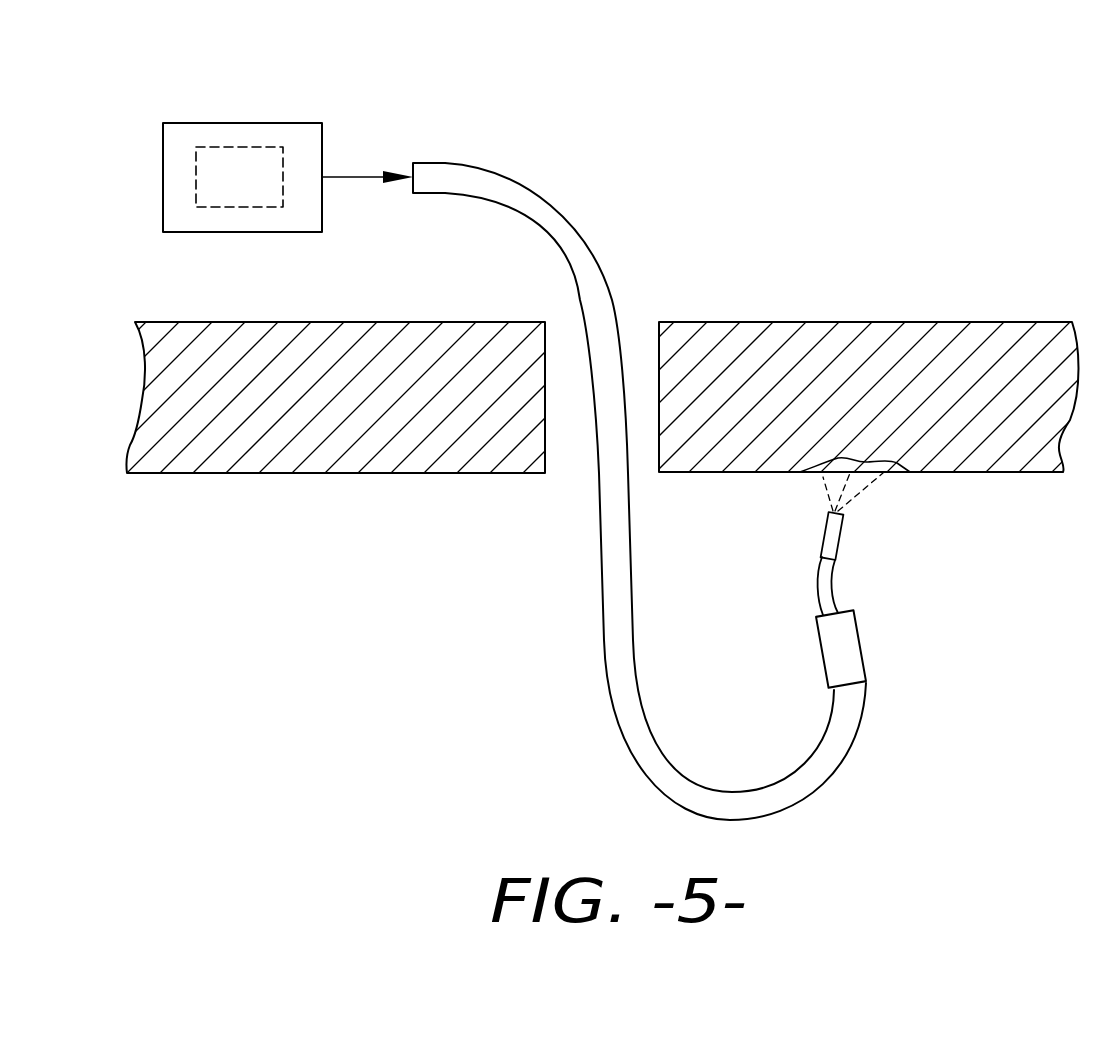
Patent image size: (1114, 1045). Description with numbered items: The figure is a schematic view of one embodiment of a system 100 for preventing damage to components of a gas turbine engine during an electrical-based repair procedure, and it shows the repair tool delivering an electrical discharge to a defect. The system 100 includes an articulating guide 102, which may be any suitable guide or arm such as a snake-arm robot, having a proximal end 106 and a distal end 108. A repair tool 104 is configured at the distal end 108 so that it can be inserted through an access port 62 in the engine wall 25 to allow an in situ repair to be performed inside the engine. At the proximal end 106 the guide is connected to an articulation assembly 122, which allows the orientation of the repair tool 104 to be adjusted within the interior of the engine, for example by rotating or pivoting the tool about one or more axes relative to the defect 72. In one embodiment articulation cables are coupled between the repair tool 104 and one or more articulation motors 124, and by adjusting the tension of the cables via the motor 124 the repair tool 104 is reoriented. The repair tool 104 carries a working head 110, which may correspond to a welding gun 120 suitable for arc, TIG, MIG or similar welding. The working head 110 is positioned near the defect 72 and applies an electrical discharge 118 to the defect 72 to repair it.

The system 100 is at (550, 427).
The articulation assembly 122 is at (227, 174).
The articulation motor 124 is at (228, 207).
The proximal end 106 is at (445, 162).
The articulating guide 102 is at (589, 243).
The access port 62 is at (633, 327).
The wall 25 is at (930, 322).
The defect 72 is at (818, 482).
The electrical discharge 118 is at (863, 493).
The working head 110 is at (822, 535).
The welding gun 120 is at (845, 530).
The repair tool 104 is at (856, 673).
The distal end 108 is at (850, 752).